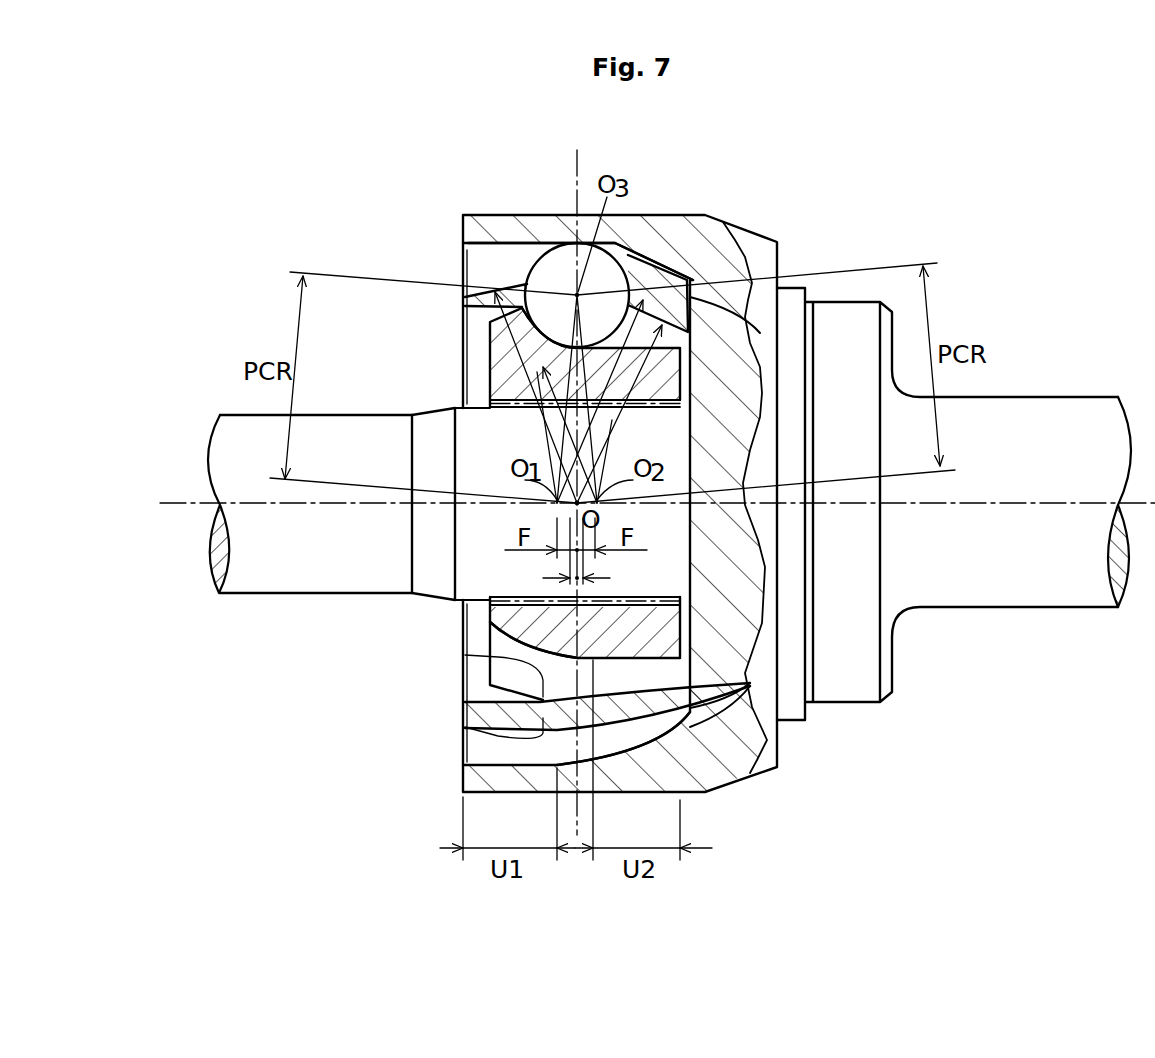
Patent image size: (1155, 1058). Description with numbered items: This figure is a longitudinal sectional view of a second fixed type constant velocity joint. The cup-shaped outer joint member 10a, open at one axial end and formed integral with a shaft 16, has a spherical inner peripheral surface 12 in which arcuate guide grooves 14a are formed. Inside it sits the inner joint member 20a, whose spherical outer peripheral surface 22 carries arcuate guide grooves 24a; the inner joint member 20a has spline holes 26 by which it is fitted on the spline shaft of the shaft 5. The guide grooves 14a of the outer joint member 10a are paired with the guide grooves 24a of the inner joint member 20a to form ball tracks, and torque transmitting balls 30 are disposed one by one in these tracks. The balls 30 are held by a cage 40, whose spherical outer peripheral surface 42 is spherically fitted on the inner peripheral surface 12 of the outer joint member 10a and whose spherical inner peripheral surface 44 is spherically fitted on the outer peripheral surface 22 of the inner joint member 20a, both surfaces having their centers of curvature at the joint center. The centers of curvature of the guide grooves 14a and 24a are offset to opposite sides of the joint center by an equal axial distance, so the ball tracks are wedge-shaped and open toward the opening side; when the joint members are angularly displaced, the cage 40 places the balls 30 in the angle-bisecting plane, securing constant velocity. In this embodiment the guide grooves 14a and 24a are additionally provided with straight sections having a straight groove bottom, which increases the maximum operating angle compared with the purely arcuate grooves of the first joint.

The outer joint member 10a is at (460, 229).
The spherical inner peripheral surface 12 is at (613, 732).
The guide grooves 14a is at (497, 247).
The inner joint member 20a is at (486, 340).
The spherical outer peripheral surface 22 is at (662, 687).
The guide grooves 24a is at (520, 350).
The spline holes 26 is at (652, 600).
The torque transmitting balls 30 is at (543, 245).
The cage 40 is at (655, 277).
The spherical outer peripheral surface 42 is at (465, 728).
The spherical inner peripheral surface 44 is at (465, 655).
The shaft 5 is at (272, 578).
The shaft 16 is at (1087, 412).